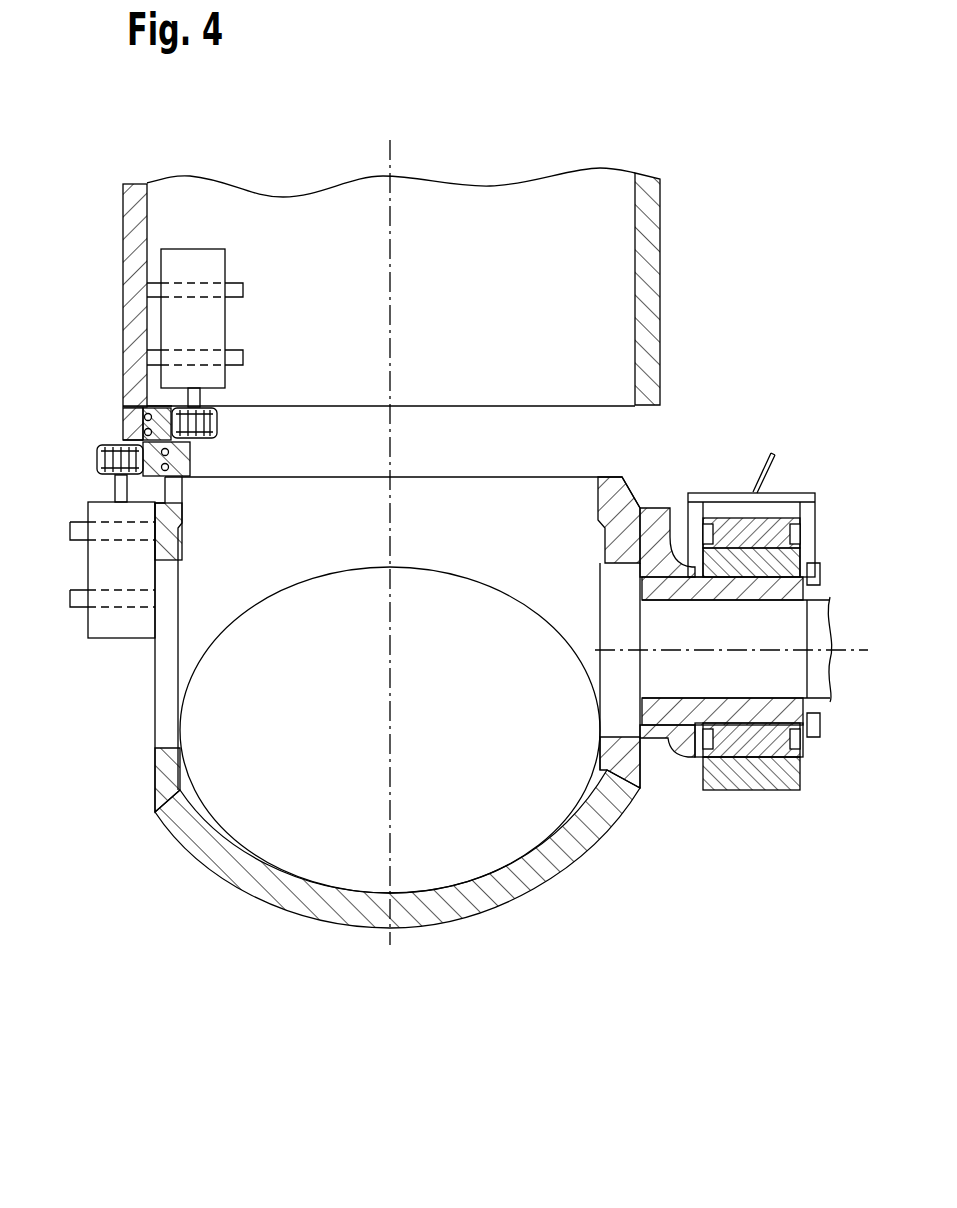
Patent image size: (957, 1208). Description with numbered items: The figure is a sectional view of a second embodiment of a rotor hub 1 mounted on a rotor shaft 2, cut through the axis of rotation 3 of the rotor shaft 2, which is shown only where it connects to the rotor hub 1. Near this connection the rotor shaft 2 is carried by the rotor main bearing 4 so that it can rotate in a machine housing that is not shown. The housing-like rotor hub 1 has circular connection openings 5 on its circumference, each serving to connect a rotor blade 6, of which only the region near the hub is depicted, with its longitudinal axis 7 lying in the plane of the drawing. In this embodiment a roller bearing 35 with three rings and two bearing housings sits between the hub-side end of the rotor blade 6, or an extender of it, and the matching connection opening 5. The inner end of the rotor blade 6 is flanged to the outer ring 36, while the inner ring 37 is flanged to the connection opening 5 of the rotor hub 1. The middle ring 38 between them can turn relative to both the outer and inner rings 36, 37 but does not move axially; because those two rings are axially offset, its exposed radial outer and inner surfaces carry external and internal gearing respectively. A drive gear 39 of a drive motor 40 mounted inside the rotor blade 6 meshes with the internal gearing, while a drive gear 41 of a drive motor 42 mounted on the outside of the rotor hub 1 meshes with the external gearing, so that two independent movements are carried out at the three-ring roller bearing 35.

The rotor hub 1 is at (312, 1006).
The rotor shaft 2 is at (850, 630).
The axis of rotation 3 is at (862, 652).
The rotor main bearing 4 is at (795, 528).
The connection opening 5 is at (478, 480).
The rotor blade 6 is at (130, 236).
The longitudinal axis 7 is at (393, 268).
The roller bearing 35 is at (98, 427).
The outer ring 36 is at (136, 426).
The inner ring 37 is at (190, 458).
The middle ring 38 is at (150, 409).
The drive gear 39 is at (218, 428).
The drive motor 40 is at (215, 322).
The drive gear 41 is at (96, 460).
The drive motor 42 is at (98, 563).